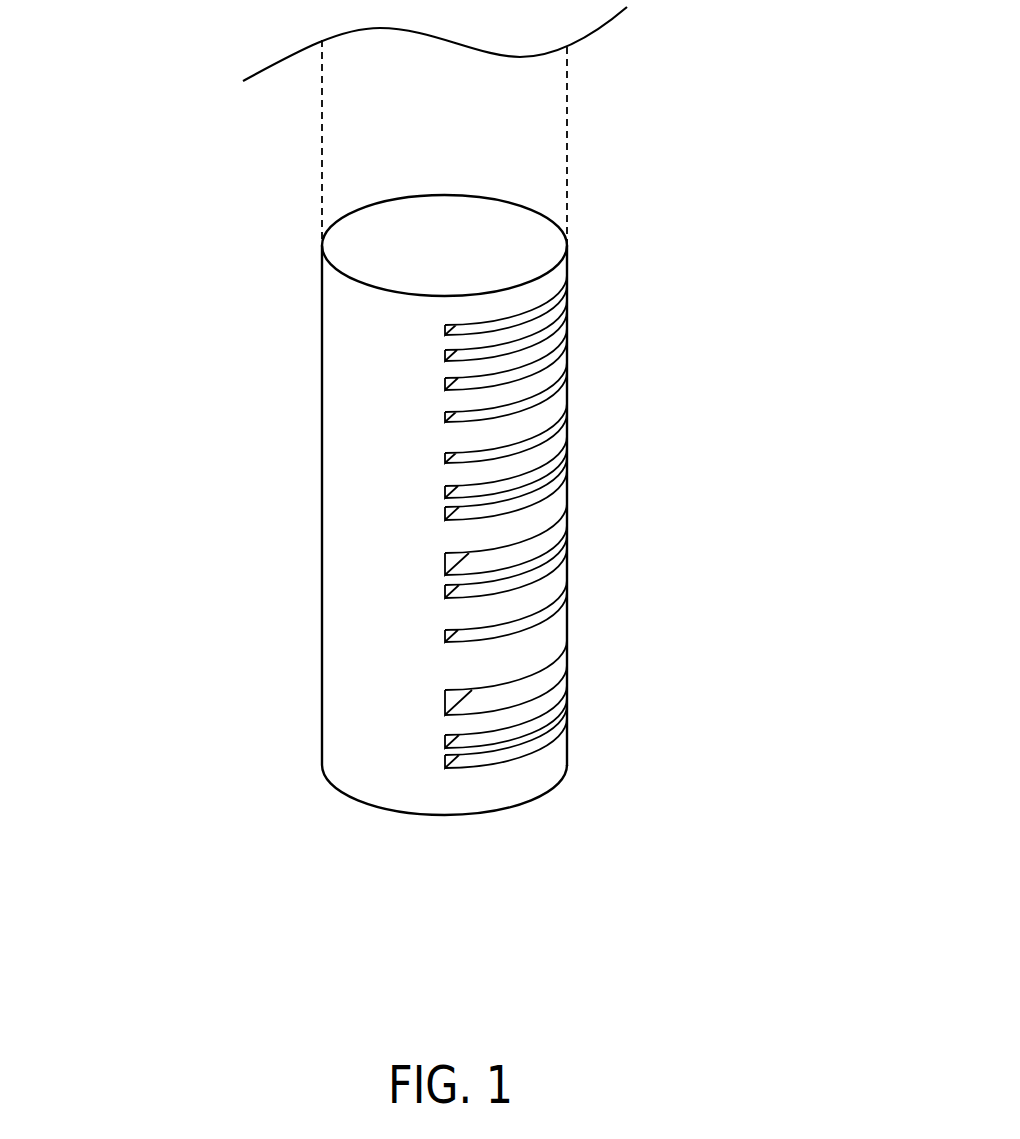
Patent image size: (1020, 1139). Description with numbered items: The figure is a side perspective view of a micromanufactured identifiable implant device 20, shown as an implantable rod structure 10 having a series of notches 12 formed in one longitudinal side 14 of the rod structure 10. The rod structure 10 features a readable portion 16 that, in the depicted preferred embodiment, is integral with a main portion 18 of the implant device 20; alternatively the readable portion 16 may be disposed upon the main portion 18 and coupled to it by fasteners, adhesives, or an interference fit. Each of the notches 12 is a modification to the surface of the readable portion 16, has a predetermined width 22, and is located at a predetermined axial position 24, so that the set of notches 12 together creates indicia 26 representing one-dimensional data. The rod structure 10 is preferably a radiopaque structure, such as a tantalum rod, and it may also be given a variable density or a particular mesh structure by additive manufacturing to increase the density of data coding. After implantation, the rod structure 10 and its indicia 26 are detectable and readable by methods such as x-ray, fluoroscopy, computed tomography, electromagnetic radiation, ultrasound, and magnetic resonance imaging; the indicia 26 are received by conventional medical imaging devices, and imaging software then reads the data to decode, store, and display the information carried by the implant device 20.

The implantable rod structure 10 is at (762, 308).
The notches 12 is at (571, 285).
The longitudinal side 14 is at (533, 773).
The readable portion 16 is at (602, 247).
The main portion 18 is at (630, 97).
The implant device 20 is at (134, 230).
The predetermined width 22 is at (441, 690).
The predetermined axial position 24 is at (445, 520).
The indicia 26 is at (402, 460).